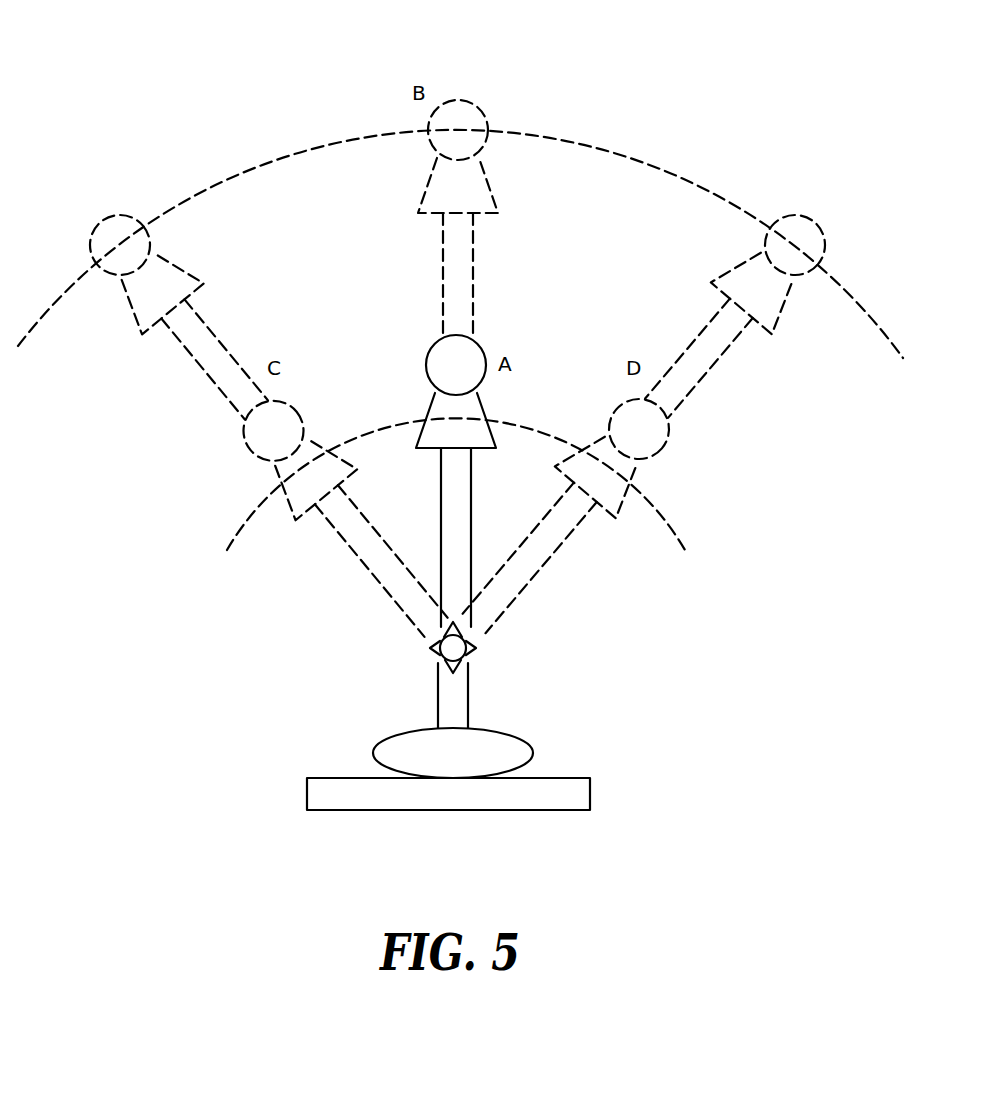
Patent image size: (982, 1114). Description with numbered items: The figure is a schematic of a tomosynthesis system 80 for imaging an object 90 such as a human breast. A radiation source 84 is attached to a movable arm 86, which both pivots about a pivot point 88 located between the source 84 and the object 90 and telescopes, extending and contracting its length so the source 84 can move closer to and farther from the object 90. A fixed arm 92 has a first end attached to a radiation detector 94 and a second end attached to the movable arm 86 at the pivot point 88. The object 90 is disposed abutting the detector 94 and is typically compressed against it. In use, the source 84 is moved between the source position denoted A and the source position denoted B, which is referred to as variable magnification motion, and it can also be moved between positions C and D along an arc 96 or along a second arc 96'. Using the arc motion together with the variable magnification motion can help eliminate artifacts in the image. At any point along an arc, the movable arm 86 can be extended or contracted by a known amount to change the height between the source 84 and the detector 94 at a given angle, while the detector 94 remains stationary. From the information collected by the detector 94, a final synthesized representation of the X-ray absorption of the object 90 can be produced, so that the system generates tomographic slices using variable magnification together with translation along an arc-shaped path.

The tomosynthesis system 80 is at (240, 54).
The radiation source 84 is at (481, 108).
The movable arm 86 is at (440, 489).
The pivot point 88 is at (458, 650).
The object being imaged 90 is at (517, 737).
The fixed arm 92 is at (438, 690).
The radiation detector 94 is at (575, 778).
The arc 96 is at (460, 269).
The arc 96' is at (489, 484).